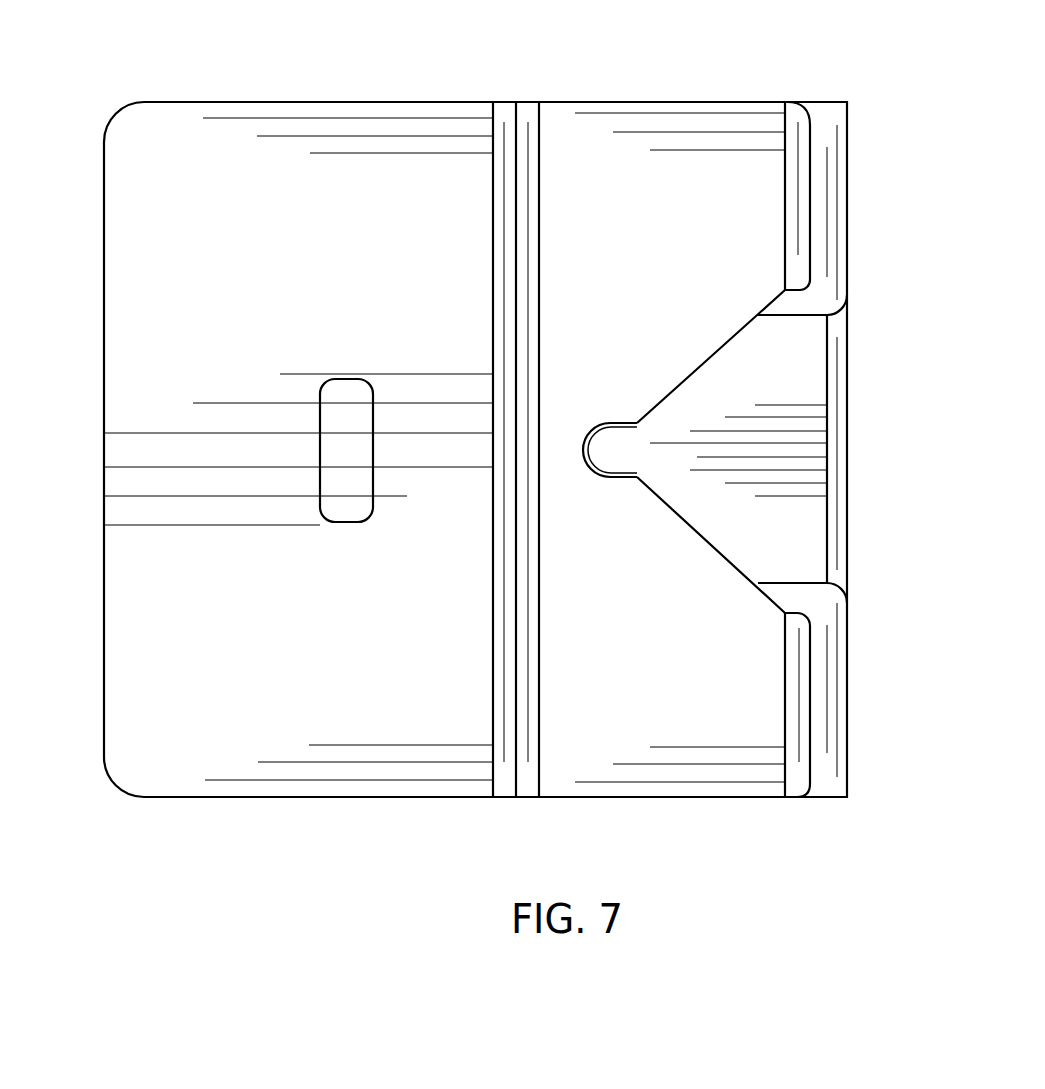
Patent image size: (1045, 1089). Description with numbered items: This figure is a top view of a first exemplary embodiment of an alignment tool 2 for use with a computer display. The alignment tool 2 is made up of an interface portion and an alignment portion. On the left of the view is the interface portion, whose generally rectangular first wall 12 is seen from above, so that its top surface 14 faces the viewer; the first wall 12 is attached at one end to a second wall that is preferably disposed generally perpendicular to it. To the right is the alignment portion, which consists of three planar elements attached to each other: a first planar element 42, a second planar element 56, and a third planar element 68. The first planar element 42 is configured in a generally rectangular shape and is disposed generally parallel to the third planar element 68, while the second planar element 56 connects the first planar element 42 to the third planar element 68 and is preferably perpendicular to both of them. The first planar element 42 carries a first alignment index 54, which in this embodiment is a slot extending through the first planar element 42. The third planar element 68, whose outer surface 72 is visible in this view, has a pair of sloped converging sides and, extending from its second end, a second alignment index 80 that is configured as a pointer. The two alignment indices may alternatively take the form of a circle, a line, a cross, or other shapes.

The alignment tool 2 is at (253, 84).
The first wall 12 is at (192, 797).
The top surface 14 is at (127, 182).
The first planar element 42 is at (650, 773).
The first alignment index 54 is at (608, 423).
The second planar element 56 is at (847, 713).
The third planar element 68 is at (827, 537).
The outer surface 72 is at (685, 123).
The second alignment index 80 is at (608, 453).